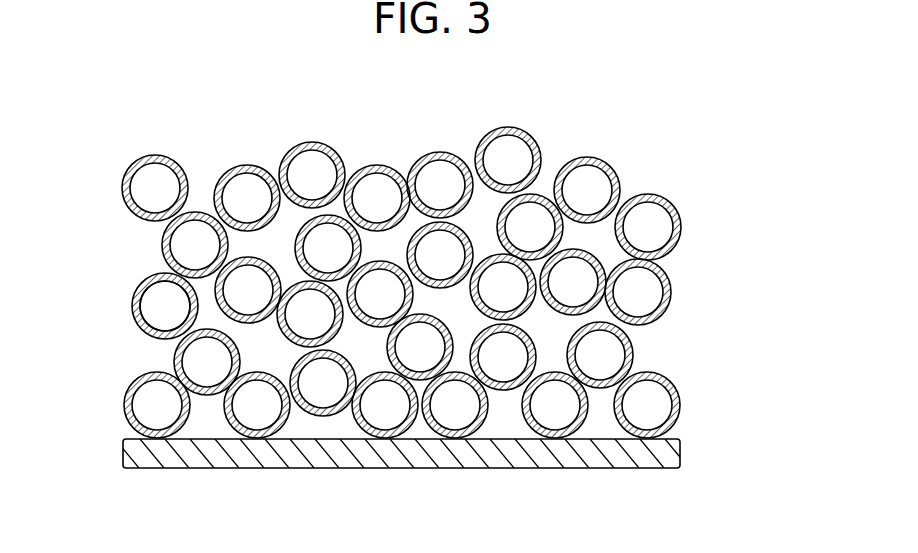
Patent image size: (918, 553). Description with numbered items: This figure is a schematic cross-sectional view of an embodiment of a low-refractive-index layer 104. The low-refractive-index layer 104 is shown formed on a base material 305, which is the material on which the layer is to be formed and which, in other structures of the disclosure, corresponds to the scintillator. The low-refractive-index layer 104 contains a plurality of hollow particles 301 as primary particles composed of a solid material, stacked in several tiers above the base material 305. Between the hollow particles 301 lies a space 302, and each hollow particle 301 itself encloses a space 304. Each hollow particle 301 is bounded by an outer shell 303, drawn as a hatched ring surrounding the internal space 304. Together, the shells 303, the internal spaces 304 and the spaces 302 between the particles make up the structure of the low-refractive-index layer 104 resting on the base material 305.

The low-refractive-index layer 104 is at (782, 160).
The hollow particles 301 is at (675, 258).
The space between the hollow particles 302 is at (587, 237).
The outer shell 303 is at (133, 318).
The space 304 is at (163, 303).
The base material 305 is at (680, 445).